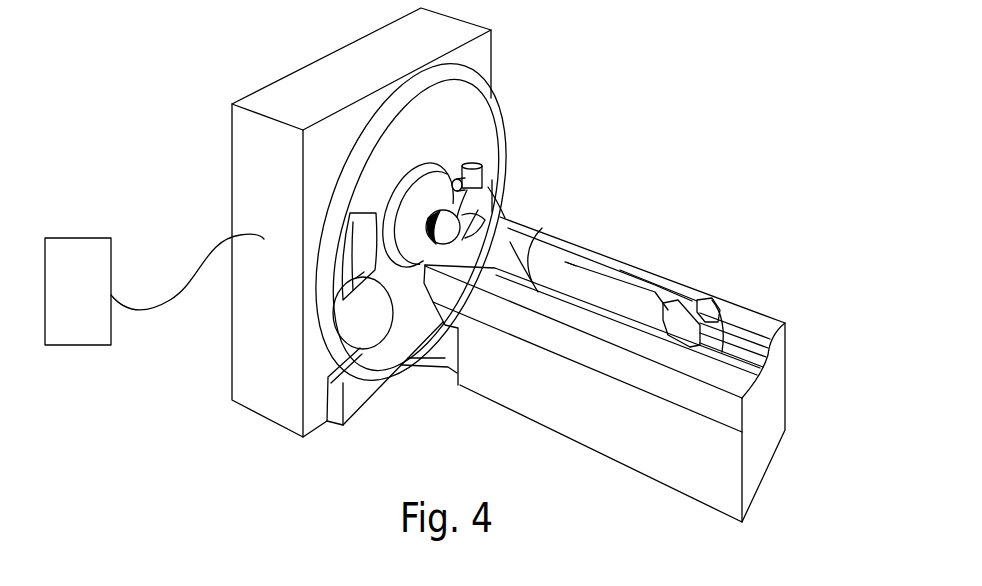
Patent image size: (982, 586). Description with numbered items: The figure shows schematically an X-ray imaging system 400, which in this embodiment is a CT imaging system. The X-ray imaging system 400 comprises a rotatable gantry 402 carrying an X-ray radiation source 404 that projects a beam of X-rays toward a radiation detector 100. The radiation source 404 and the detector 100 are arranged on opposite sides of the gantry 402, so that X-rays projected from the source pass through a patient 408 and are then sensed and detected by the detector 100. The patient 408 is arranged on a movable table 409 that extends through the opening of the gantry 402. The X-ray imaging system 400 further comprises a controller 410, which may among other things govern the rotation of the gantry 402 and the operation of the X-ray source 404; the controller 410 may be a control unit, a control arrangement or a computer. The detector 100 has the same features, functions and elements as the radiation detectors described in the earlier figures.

The X-ray imaging system 400 is at (731, 114).
The rotatable gantry 402 is at (231, 123).
The X-ray radiation source 404 is at (483, 182).
The patient 408 is at (506, 218).
The movable table 409 is at (770, 402).
The controller 410 is at (96, 240).
The radiation detector 100 is at (388, 352).